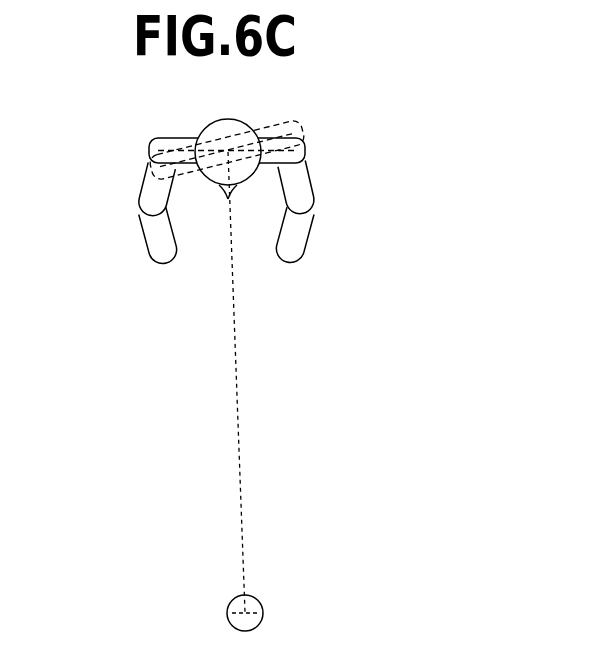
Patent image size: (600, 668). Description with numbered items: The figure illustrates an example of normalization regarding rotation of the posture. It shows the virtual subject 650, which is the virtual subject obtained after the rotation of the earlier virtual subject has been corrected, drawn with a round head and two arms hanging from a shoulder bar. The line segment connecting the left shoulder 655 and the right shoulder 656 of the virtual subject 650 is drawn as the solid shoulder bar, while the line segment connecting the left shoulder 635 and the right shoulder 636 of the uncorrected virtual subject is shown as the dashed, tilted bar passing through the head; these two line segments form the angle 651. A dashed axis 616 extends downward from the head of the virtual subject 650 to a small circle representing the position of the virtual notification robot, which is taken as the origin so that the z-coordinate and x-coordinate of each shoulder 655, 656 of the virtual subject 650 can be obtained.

The virtual subject 650 is at (150, 253).
The angle 651 is at (172, 166).
The left shoulder 655 is at (307, 150).
The right shoulder 656 is at (150, 152).
The left shoulder 635 is at (305, 133).
The right shoulder 636 is at (149, 167).
The body axis line 616 is at (237, 363).